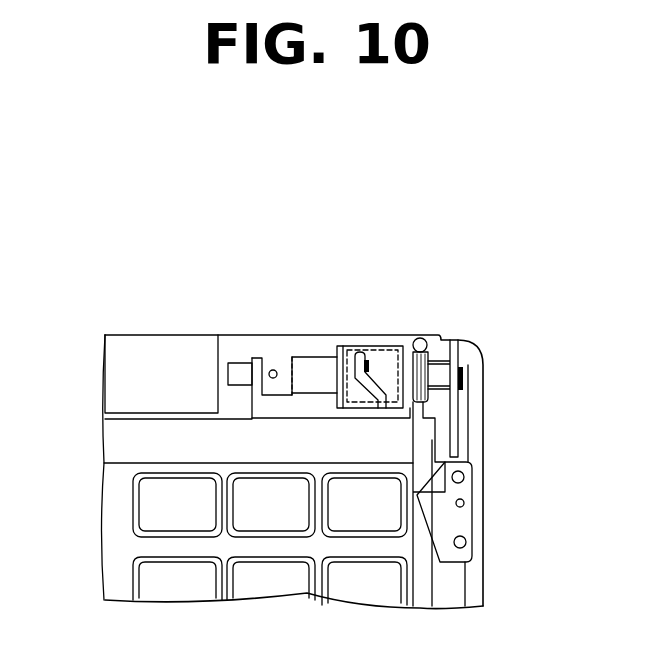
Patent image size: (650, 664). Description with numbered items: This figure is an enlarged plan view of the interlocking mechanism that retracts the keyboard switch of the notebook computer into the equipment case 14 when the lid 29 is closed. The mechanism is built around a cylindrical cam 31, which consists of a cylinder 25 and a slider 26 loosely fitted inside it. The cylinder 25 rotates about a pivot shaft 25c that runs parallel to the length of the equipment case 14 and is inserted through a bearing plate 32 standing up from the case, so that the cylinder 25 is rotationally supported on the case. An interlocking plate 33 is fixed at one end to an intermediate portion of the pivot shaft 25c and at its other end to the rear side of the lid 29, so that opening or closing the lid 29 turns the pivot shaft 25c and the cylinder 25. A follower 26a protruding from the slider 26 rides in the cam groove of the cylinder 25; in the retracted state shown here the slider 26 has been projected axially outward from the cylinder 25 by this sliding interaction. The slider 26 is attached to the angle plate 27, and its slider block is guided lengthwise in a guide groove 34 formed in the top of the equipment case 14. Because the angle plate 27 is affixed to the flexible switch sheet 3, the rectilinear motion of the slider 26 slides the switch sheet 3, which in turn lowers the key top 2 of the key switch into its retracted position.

The key top 2 is at (353, 575).
The switch sheet 3 is at (117, 527).
The equipment case 14 is at (470, 593).
The cylinder 25 is at (390, 378).
The pivot shaft 25c is at (455, 352).
The slider 26 is at (316, 368).
The follower 26a is at (360, 372).
The angle plate 27 is at (127, 440).
The lid 29 is at (155, 360).
The cylindrical cam 31 is at (352, 330).
The bearing plate 32 is at (443, 403).
The interlocking plate 33 is at (440, 525).
The guide groove 34 is at (240, 362).